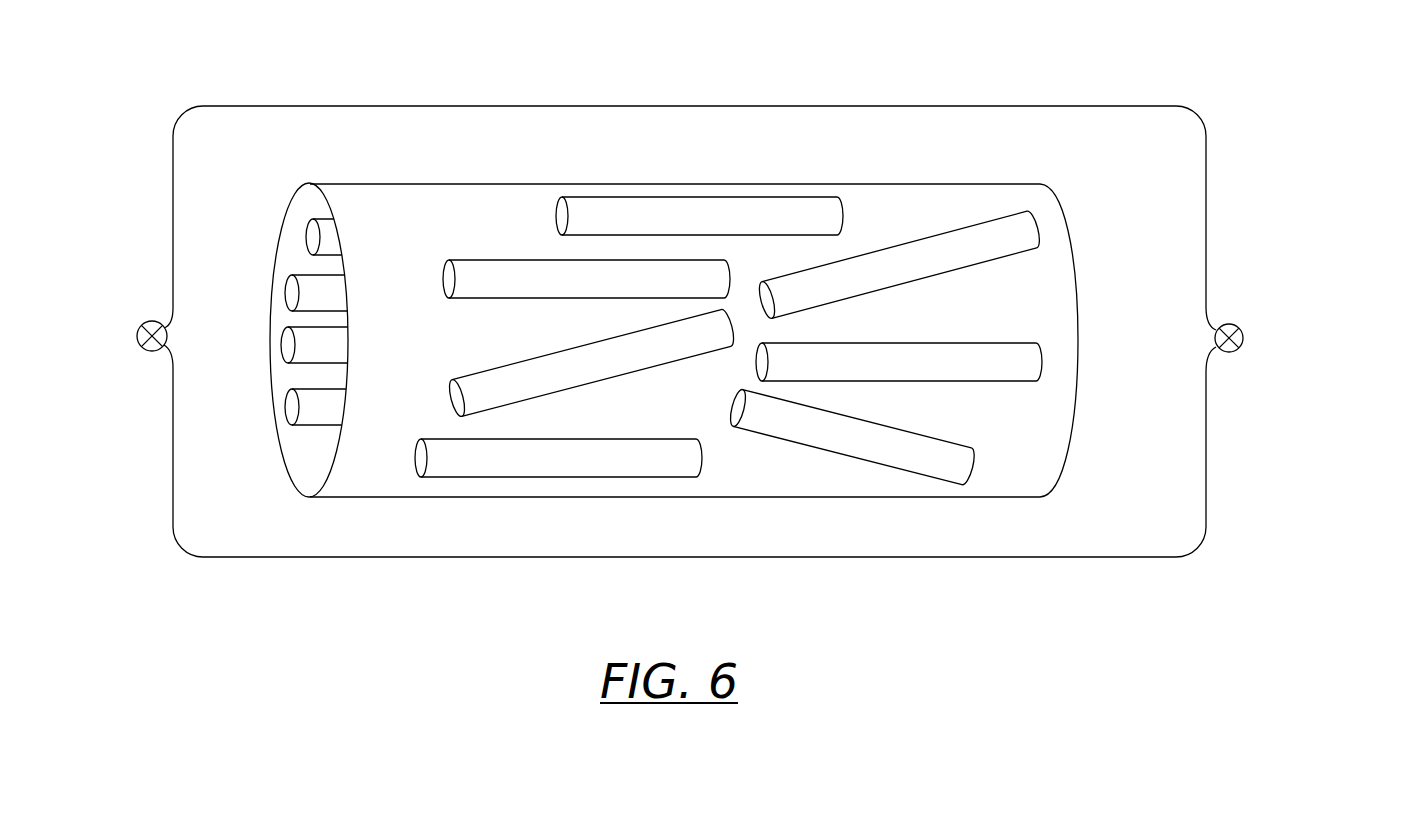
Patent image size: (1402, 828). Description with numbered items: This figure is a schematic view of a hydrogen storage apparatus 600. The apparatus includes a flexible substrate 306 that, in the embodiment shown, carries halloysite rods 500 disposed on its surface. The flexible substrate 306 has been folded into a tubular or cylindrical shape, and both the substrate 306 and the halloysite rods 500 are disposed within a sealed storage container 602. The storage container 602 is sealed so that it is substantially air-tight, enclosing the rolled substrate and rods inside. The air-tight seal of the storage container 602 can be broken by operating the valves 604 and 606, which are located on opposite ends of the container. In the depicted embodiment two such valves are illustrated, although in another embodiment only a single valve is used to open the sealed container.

The hydrogen storage apparatus 600 is at (248, 618).
The sealed storage container 602 is at (1160, 462).
The valve 604 is at (1241, 329).
The valve 606 is at (137, 333).
The flexible substrate 306 is at (1043, 287).
The halloysite rods 500 is at (585, 222).